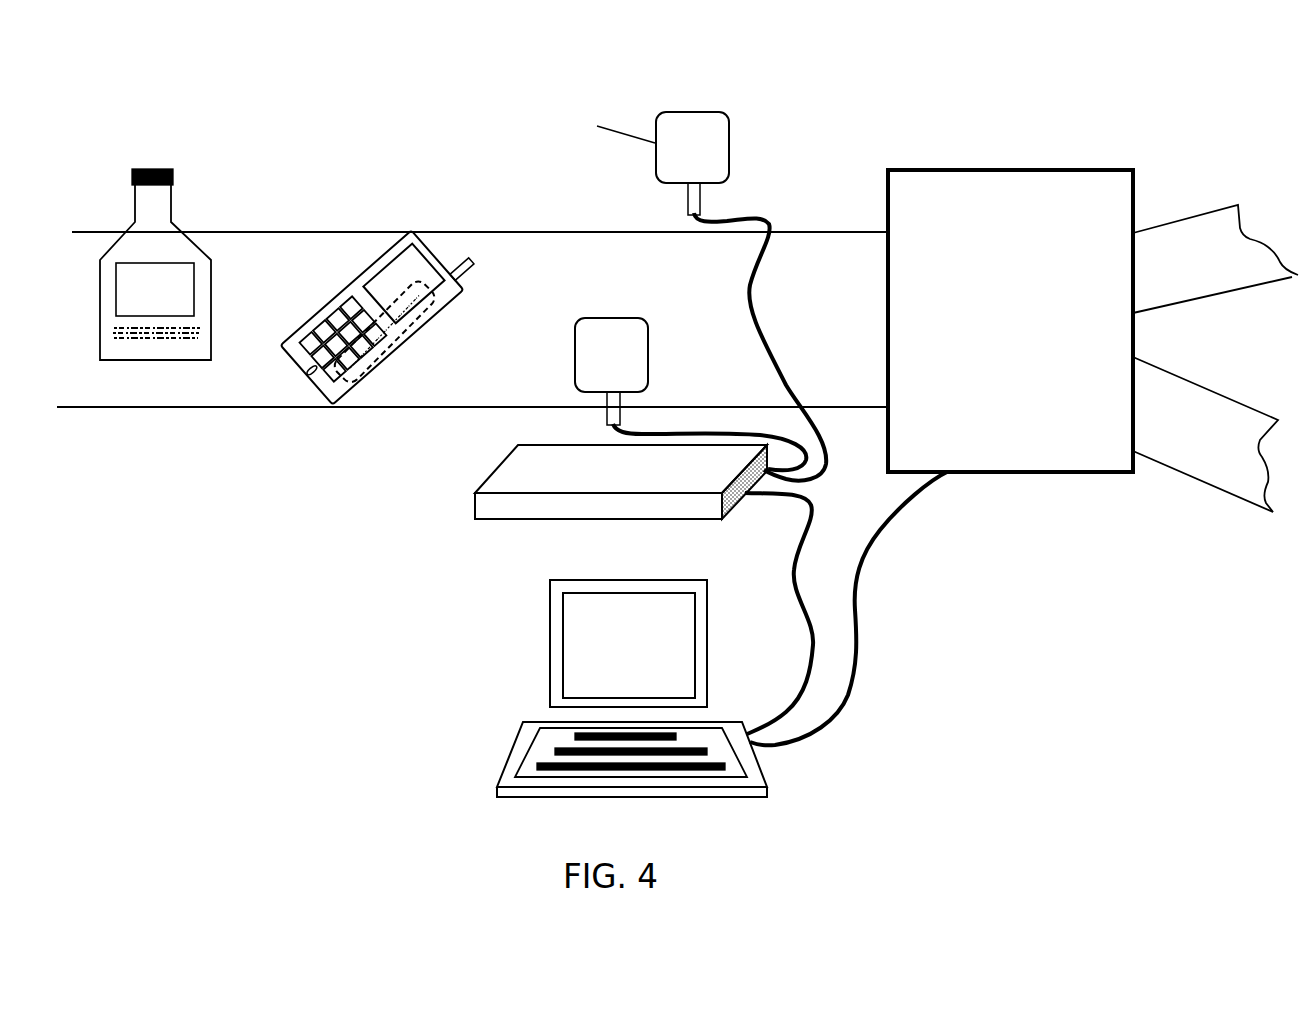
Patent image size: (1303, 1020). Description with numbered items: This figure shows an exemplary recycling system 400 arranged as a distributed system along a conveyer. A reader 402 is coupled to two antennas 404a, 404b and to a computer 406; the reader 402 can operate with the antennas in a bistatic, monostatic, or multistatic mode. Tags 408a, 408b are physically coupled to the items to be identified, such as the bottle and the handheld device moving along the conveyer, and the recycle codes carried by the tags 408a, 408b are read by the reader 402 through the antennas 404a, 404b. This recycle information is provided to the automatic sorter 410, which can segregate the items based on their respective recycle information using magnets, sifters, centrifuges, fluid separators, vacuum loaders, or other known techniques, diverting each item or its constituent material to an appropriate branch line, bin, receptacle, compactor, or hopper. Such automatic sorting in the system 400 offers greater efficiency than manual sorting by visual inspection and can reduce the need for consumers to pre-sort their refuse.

The recycling system 400 is at (1042, 88).
The reader 402 is at (475, 503).
The antenna 404a is at (575, 355).
The antenna 404b is at (656, 171).
The computer 406 is at (521, 748).
The tag 408a is at (115, 333).
The tag 408b is at (387, 347).
The automatic sorter 410 is at (1015, 473).